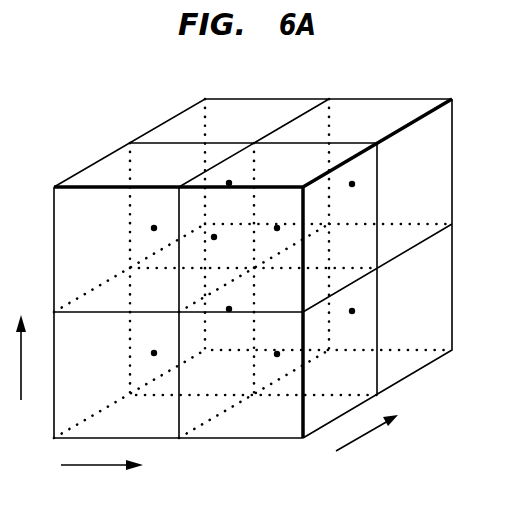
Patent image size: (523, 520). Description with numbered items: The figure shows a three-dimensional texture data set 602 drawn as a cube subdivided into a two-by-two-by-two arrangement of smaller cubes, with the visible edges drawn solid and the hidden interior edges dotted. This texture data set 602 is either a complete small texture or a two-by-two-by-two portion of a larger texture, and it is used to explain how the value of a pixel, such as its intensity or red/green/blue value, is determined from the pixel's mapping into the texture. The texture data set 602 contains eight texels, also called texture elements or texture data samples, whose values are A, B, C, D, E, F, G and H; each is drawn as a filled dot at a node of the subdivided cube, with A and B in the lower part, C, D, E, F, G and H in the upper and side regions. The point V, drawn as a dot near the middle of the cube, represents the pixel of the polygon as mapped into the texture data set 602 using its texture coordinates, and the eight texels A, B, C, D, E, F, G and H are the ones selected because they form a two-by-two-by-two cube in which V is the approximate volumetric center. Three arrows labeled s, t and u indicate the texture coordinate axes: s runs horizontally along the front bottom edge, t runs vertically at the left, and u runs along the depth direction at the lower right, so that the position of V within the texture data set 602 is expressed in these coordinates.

The texture data set 602 is at (375, 86).
The texel value A is at (147, 355).
The texel value B is at (269, 362).
The texel value C is at (147, 228).
The texel value D is at (270, 238).
The texel value E is at (236, 301).
The texel value F is at (359, 310).
The texel value G is at (236, 172).
The texel value H is at (361, 185).
The mapped pixel V is at (223, 240).
The S texture coordinate axis s is at (102, 477).
The T texture coordinate axis t is at (15, 357).
The U texture coordinate axis u is at (367, 438).